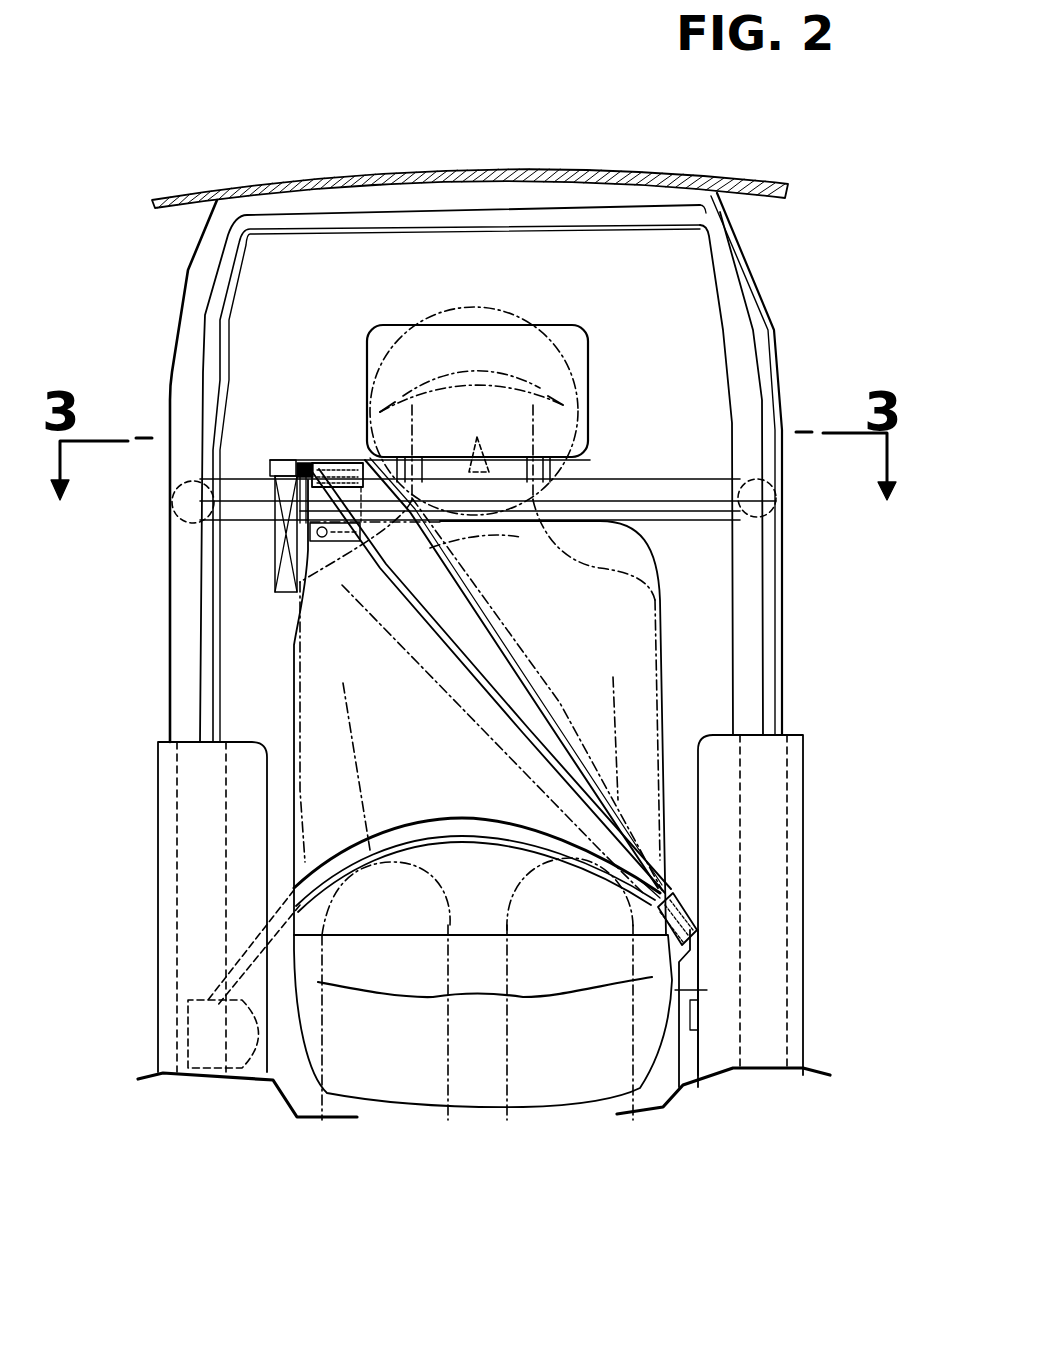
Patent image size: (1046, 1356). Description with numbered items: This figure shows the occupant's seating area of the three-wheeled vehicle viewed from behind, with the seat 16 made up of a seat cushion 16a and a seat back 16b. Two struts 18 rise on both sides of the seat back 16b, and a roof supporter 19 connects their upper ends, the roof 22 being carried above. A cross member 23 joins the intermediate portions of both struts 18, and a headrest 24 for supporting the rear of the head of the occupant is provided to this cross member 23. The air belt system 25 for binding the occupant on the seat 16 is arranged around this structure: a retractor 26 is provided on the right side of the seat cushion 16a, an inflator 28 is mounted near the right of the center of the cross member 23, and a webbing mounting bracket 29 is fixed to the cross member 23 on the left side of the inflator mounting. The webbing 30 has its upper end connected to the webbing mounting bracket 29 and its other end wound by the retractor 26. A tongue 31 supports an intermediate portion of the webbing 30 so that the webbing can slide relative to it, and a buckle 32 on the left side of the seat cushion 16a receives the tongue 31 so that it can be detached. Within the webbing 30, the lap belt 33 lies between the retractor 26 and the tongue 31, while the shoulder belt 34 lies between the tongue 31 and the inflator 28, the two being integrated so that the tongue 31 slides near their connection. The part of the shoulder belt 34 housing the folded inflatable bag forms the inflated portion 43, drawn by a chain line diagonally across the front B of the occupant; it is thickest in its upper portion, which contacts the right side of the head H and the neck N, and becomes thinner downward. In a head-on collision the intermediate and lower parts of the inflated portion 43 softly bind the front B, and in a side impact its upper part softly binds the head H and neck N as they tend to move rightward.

The seat 16 is at (585, 857).
The seat cushion 16a is at (473, 1090).
The seat back 16b is at (640, 558).
The strut 18 is at (190, 328).
The roof supporter 19 is at (390, 222).
The roof 22 is at (455, 172).
The cross member 23 is at (649, 483).
The headrest 24 is at (588, 345).
The air belt system 25 is at (681, 879).
The retractor 26 is at (210, 1057).
The inflator 28 is at (285, 597).
The webbing mounting bracket 29 is at (334, 546).
The webbing 30 is at (482, 690).
The tongue 31 is at (617, 873).
The buckle 32 is at (700, 930).
The lap belt 33 is at (490, 827).
The shoulder belt 34 is at (478, 660).
The inflated portion 43 is at (536, 675).
The head H is at (510, 320).
The neck N is at (556, 598).
The front B is at (600, 727).